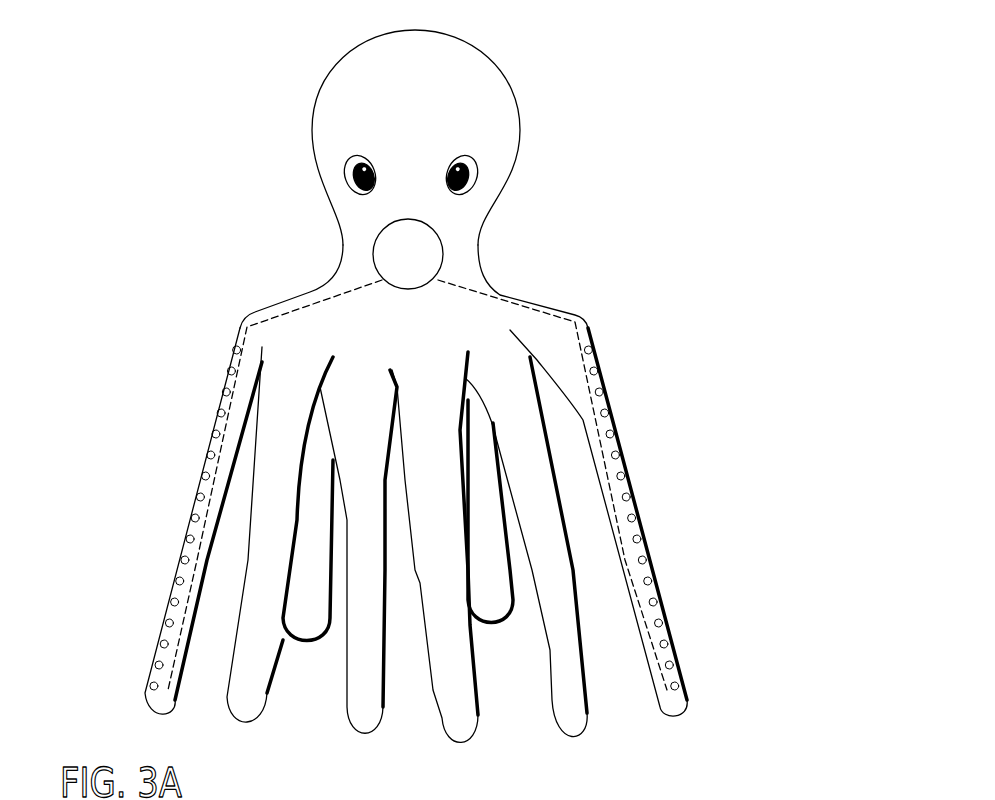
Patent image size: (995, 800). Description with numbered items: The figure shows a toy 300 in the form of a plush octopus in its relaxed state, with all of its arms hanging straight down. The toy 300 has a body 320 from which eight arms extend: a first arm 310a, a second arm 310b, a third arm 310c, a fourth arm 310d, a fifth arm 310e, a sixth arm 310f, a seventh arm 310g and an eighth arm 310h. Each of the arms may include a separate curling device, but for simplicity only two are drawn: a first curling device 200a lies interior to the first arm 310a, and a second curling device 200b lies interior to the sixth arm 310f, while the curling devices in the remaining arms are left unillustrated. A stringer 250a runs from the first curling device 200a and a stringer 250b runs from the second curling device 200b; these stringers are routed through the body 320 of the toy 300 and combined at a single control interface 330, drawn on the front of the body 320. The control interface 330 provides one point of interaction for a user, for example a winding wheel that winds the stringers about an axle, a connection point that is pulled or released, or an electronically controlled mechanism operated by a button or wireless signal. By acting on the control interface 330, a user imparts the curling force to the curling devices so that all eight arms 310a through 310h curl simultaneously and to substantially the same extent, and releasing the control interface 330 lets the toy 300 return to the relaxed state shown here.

The toy 300 is at (592, 52).
The body 320 is at (327, 100).
The control interface 330 is at (390, 247).
The stringer 250a is at (347, 293).
The stringer 250b is at (533, 313).
The first arm 310a is at (153, 642).
The arm 310b is at (253, 703).
The arm 310c is at (365, 712).
The arm 310d is at (467, 722).
The arm 310e is at (580, 700).
The sixth arm 310f is at (670, 633).
The arm 310g is at (497, 595).
The arm 310h is at (313, 612).
The first curling device 200a is at (155, 678).
The second curling device 200b is at (660, 677).